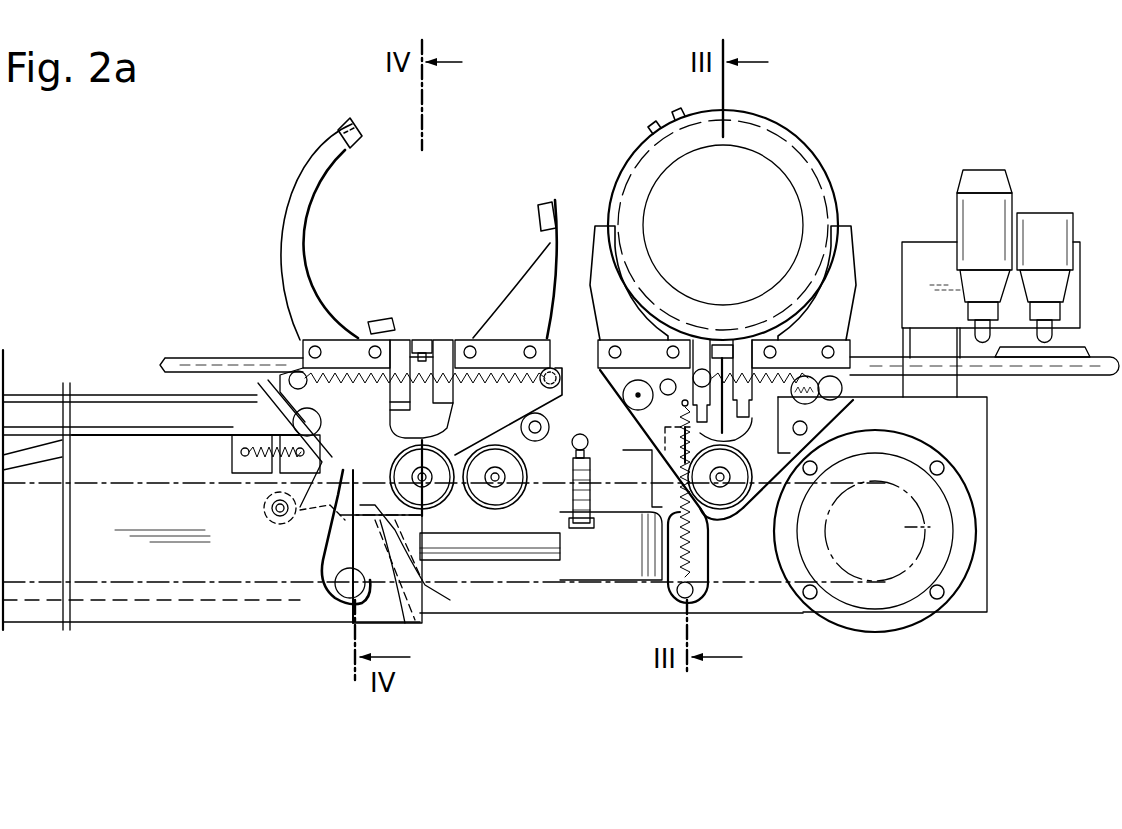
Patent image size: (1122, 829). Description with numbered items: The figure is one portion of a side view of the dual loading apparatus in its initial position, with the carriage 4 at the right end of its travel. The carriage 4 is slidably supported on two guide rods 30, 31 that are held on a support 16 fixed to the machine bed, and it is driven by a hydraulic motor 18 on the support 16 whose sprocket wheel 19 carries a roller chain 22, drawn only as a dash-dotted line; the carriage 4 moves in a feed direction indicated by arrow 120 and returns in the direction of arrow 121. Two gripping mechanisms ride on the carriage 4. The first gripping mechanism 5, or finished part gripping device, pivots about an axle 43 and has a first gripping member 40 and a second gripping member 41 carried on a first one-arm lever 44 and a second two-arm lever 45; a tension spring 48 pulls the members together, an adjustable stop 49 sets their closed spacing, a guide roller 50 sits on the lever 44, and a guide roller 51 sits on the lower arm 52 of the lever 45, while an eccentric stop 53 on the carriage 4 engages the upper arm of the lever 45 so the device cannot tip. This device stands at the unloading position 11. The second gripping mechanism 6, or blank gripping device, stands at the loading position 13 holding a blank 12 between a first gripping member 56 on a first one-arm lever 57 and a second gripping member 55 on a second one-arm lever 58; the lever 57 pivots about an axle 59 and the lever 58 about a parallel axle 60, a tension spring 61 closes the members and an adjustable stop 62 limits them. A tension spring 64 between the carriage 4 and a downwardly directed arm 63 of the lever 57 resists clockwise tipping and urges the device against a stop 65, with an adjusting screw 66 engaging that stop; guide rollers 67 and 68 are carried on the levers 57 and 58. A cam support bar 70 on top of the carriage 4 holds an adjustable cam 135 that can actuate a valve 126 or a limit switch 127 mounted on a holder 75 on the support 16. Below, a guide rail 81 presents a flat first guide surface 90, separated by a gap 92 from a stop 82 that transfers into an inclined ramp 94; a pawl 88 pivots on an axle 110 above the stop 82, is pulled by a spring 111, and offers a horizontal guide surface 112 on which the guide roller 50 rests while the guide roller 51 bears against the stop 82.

The carriage 4 is at (603, 580).
The first gripping mechanism 5 is at (462, 166).
The second gripping mechanism 6 is at (832, 140).
The unloading position 11 is at (423, 131).
The blank 12 is at (783, 152).
The loading position 13 is at (726, 108).
The support 16 is at (968, 447).
The motor 18 is at (873, 592).
The sprocket wheel 19 is at (912, 528).
The roller chain 22 is at (552, 575).
The guide rod 30 is at (130, 393).
The guide rod 31 is at (480, 538).
The first gripping member 40 is at (305, 172).
The second gripping member 41 is at (548, 245).
The axle 43 is at (428, 470).
The first one-arm lever 44 is at (352, 350).
The second two-arm lever 45 is at (490, 352).
The tension spring 48 is at (505, 358).
The adjustable stop 49 is at (423, 345).
The guide roller 50 is at (300, 412).
The guide roller 51 is at (382, 617).
The lower arm 52 is at (408, 622).
The stop 53 is at (550, 426).
The second gripping member 55 is at (597, 277).
The first gripping member 56 is at (851, 262).
The first one-arm lever 57 is at (757, 450).
The second one-arm lever 58 is at (642, 358).
The axle 59 is at (497, 487).
The axle 60 is at (722, 483).
The tension spring 61 is at (760, 347).
The adjustable stop 62 is at (723, 345).
The downwardly directed arm 63 is at (698, 560).
The tension spring 64 is at (677, 550).
The stop 65 is at (588, 443).
The adjusting screw 66 is at (581, 528).
The guide roller 67 is at (816, 400).
The guide roller 68 is at (655, 445).
The cam support bar 70 is at (205, 357).
The holder 75 is at (918, 252).
The guide rail 81 is at (185, 614).
The stop 82 is at (397, 540).
The pawl 88 is at (312, 462).
The first guide surface 90 is at (262, 600).
The gap 92 is at (350, 625).
The inclined ramp 94 is at (322, 538).
The axle 110 is at (272, 508).
The spring 111 is at (235, 462).
The guide surface 112 is at (297, 442).
The arrow 120 is at (150, 143).
The arrow 121 is at (148, 173).
The valve 126 is at (975, 215).
The limit switch 127 is at (1045, 228).
The cam 135 is at (1067, 353).